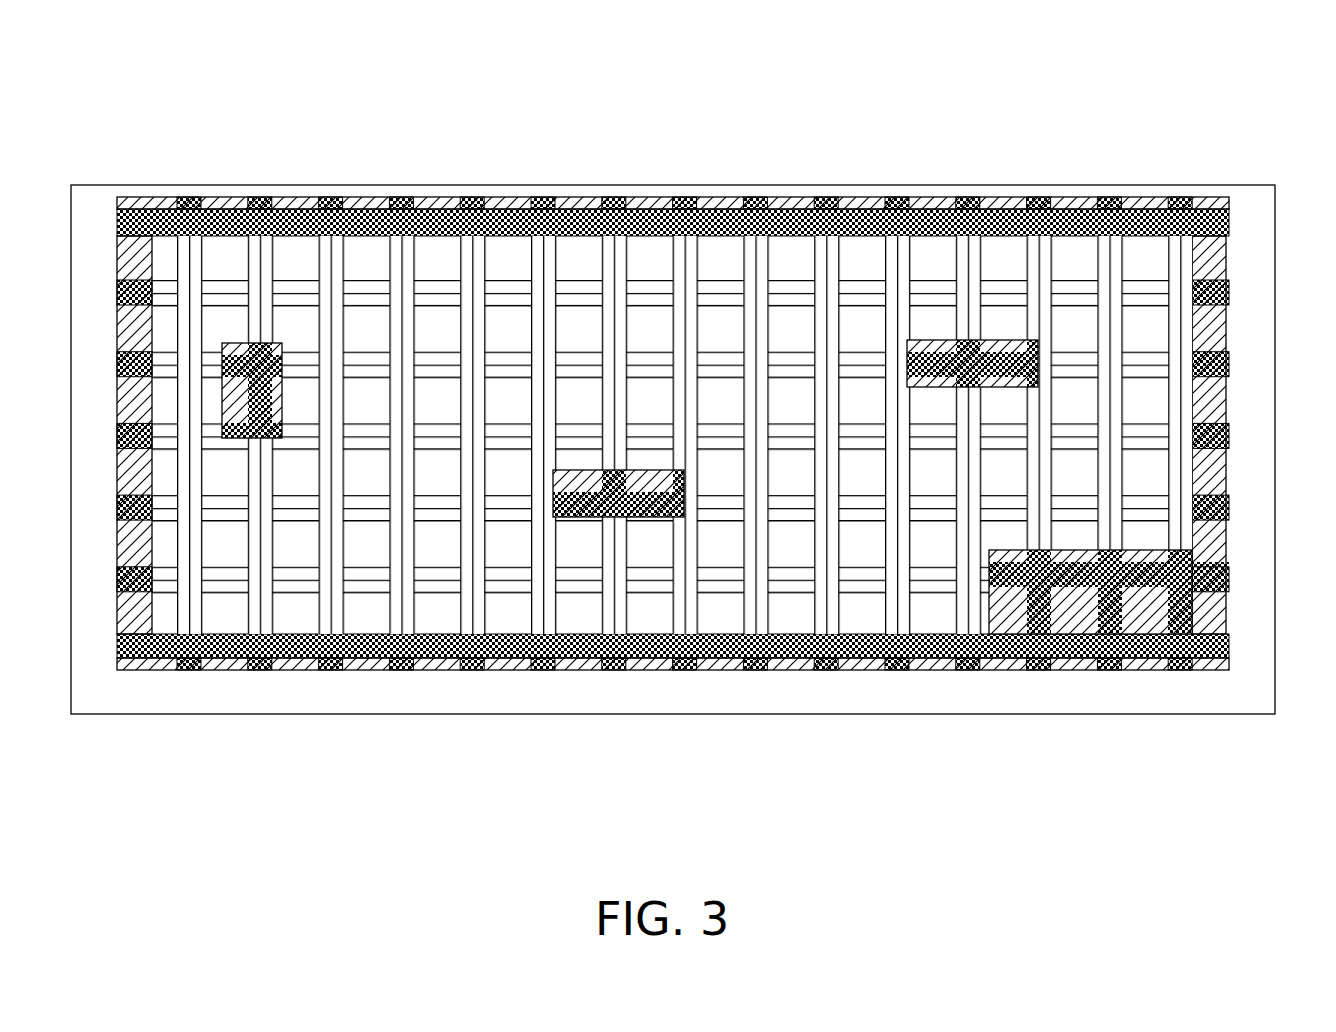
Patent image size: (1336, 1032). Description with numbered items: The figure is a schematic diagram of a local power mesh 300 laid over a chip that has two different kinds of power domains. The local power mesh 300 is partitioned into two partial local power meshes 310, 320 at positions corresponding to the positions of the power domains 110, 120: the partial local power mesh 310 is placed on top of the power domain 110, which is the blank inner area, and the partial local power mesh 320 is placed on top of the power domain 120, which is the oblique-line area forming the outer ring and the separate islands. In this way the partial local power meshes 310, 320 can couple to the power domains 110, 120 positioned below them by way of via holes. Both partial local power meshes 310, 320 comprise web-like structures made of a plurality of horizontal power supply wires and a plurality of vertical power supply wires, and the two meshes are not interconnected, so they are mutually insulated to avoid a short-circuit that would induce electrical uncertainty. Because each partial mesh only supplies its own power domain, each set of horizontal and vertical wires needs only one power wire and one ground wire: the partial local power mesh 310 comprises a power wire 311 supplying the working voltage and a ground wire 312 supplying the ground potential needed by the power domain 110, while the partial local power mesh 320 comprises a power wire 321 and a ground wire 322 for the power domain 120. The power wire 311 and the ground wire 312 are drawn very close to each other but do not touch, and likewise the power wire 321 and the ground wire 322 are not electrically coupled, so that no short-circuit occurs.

The local power mesh 300 is at (1190, 122).
The power domain 120 is at (704, 480).
The power domain 110 is at (672, 485).
The partial local power mesh 310 is at (672, 530).
The power wire 311 is at (750, 612).
The ground wire 312 is at (755, 612).
The partial local power mesh 320 is at (279, 359).
The power wire 321 is at (1230, 208).
The ground wire 322 is at (1230, 223).